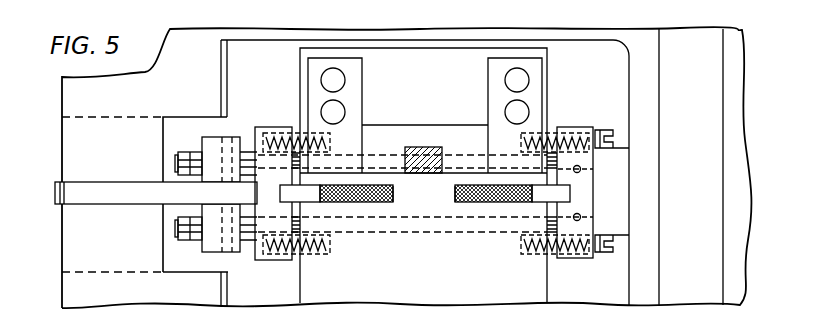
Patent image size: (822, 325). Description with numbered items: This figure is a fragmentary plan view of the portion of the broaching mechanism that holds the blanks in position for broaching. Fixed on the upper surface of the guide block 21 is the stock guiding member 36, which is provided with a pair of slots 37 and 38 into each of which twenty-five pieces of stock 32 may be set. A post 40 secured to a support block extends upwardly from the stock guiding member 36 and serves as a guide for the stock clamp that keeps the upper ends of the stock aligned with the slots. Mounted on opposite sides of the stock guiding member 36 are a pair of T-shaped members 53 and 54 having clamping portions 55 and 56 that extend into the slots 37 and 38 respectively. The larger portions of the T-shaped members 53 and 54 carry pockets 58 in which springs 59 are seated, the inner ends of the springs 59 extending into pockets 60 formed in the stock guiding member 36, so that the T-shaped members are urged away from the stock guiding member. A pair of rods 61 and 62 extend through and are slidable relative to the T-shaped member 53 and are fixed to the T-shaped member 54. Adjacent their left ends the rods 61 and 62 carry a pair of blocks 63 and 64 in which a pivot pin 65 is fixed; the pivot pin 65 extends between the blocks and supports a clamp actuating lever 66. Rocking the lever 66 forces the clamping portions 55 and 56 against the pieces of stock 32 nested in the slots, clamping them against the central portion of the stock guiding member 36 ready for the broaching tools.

The guide block 21 is at (670, 187).
The piece of stock 32 is at (440, 203).
The stock guiding member 36 is at (533, 286).
The slot 37 is at (373, 203).
The slot 38 is at (490, 203).
The post 40 is at (425, 147).
The T-shaped member 53 is at (266, 134).
The T-shaped member 54 is at (597, 128).
The clamping portion 55 is at (316, 198).
The clamping portion 56 is at (540, 198).
The pocket 58 is at (261, 128).
The spring 59 is at (301, 140).
The pocket 60 is at (323, 138).
The rod 61 is at (173, 160).
The rod 62 is at (175, 228).
The block 63 is at (208, 140).
The block 64 is at (212, 248).
The pivot pin 65 is at (222, 137).
The clamp actuating lever 66 is at (80, 194).